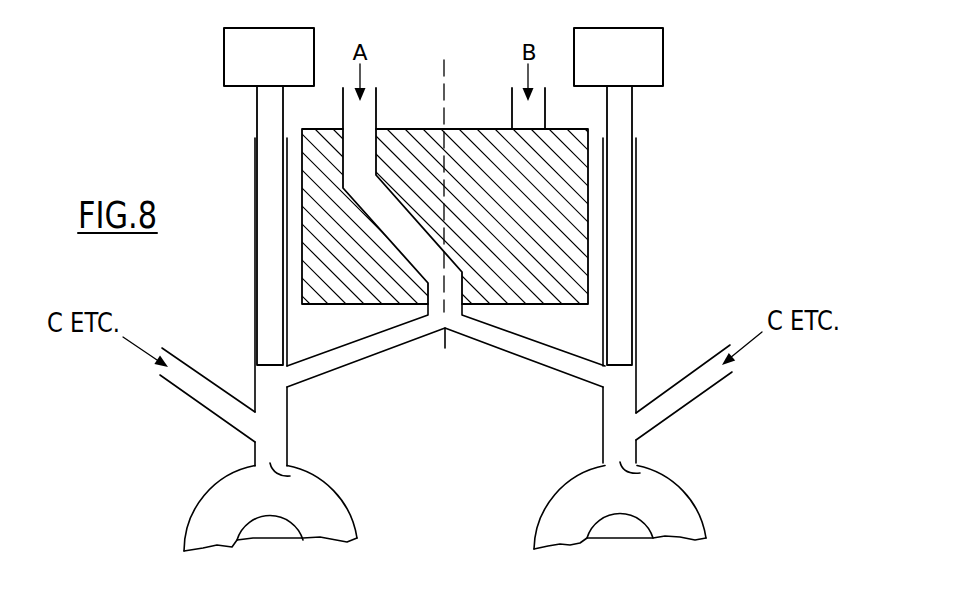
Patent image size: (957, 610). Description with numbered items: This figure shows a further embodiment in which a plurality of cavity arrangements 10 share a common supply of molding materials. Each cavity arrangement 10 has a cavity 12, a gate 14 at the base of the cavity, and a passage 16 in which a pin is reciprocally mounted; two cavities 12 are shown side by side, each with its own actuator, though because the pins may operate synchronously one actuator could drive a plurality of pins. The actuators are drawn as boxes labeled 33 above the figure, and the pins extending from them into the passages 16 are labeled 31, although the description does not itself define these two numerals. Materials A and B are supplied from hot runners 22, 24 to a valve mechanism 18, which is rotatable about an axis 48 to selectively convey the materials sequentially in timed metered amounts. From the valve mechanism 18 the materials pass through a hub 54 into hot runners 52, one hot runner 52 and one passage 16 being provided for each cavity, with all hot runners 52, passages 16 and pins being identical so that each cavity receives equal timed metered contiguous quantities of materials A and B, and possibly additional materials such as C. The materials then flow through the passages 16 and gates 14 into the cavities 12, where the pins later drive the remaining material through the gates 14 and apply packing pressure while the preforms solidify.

The cavity arrangement 10 is at (383, 478).
The cavity 12 is at (340, 520).
The gate 14 is at (290, 476).
The passage 16 is at (275, 398).
The valve mechanism 18 is at (573, 202).
The hot runner 22 is at (362, 124).
The hot runner 24 is at (520, 112).
The actuator rod 31 is at (263, 132).
The actuator 33 is at (287, 67).
The axis 48 is at (441, 70).
The hot runner 52 is at (372, 345).
The hub 54 is at (455, 310).